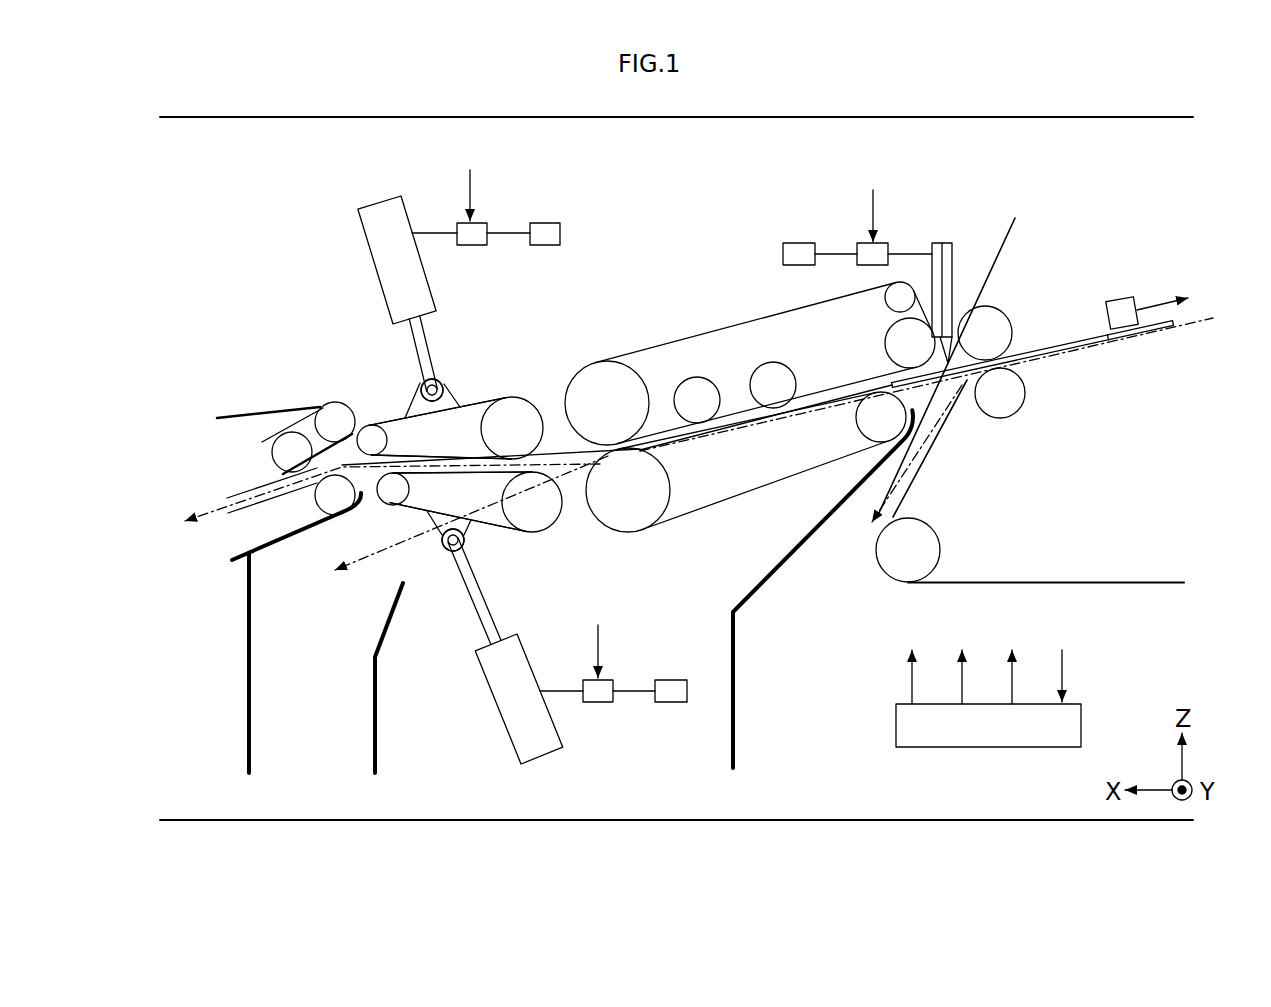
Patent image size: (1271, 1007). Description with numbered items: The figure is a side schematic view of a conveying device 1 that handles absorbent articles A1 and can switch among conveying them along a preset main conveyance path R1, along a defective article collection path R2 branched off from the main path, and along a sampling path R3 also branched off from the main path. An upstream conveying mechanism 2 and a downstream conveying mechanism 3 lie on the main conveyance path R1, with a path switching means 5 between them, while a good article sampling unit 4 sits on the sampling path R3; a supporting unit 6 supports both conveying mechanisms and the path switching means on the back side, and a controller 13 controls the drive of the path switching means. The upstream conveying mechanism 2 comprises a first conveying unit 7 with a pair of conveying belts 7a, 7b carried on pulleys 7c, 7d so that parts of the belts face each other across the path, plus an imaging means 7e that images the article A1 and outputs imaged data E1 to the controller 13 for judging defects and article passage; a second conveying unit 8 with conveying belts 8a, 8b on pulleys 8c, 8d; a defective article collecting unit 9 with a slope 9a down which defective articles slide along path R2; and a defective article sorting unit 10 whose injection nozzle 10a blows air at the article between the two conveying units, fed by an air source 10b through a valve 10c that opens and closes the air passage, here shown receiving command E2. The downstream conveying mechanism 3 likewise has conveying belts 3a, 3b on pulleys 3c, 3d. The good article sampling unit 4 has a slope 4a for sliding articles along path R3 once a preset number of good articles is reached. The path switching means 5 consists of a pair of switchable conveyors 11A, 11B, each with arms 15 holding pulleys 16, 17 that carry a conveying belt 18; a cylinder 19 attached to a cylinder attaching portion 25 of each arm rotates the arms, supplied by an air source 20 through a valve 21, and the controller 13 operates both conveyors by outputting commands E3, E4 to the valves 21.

The conveying device 1 is at (676, 440).
The upstream conveying mechanism 2 is at (889, 358).
The downstream conveying mechanism 3 is at (400, 432).
The conveying belt 3a is at (258, 416).
The conveying belt 3b is at (247, 554).
The pulley 3c is at (263, 442).
The pulley 3d is at (315, 501).
The good article sampling unit 4 is at (290, 663).
The slope 4a is at (247, 668).
The path switching means 5 is at (489, 472).
The supporting unit 6 is at (827, 116).
The first conveying unit 7 is at (1050, 388).
The conveying belt 7a is at (1003, 247).
The conveying belt 7b is at (945, 435).
The pulley 7c is at (1003, 307).
The pulley 7d is at (1023, 408).
The imaging means 7e is at (1120, 300).
The second conveying unit 8 is at (889, 394).
The conveying belt 8a is at (797, 313).
The conveying belt 8b is at (778, 481).
The pulley 8c is at (635, 366).
The pulley 8d is at (669, 469).
The defective article collecting unit 9 is at (947, 589).
The slope 9a is at (749, 604).
The defective article sorting unit 10 is at (883, 258).
The injection nozzle 10a is at (952, 257).
The air source 10b is at (797, 243).
The valve 10c is at (866, 243).
The switchable conveyor 11A is at (492, 330).
The switchable conveyor 11B is at (437, 655).
The controller 13 is at (1082, 723).
The arm 15 is at (444, 388).
The pulley 16 is at (484, 413).
The pulley 17 is at (389, 442).
The conveying belt 18 is at (388, 424).
The cylinder 19 is at (428, 282).
The air source 20 is at (545, 222).
The valve 21 is at (478, 222).
The cylinder attaching portion 25 is at (442, 465).
The absorbent article A1 is at (1093, 357).
The imaged data E1 is at (1182, 295).
The cutter control signal E2 is at (871, 199).
The command E3 is at (471, 179).
The command E4 is at (596, 636).
The main conveyance path R1 is at (214, 507).
The defective article collection path R2 is at (930, 472).
The sampling path R3 is at (366, 560).